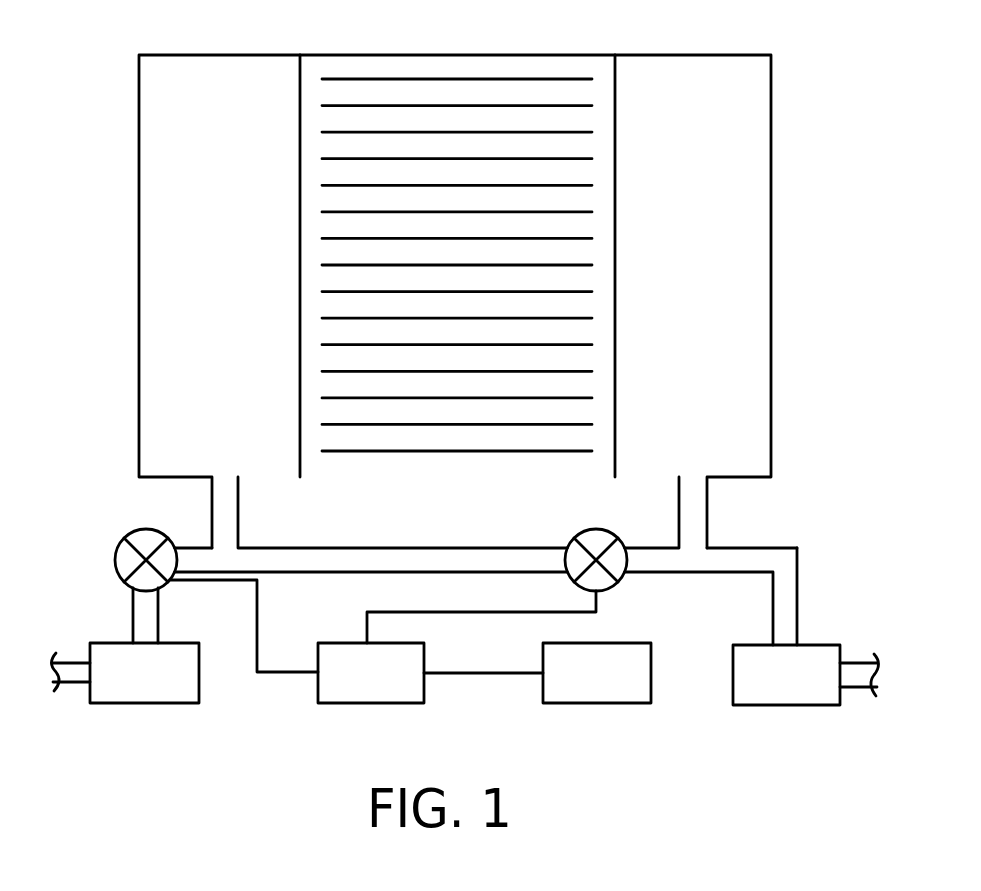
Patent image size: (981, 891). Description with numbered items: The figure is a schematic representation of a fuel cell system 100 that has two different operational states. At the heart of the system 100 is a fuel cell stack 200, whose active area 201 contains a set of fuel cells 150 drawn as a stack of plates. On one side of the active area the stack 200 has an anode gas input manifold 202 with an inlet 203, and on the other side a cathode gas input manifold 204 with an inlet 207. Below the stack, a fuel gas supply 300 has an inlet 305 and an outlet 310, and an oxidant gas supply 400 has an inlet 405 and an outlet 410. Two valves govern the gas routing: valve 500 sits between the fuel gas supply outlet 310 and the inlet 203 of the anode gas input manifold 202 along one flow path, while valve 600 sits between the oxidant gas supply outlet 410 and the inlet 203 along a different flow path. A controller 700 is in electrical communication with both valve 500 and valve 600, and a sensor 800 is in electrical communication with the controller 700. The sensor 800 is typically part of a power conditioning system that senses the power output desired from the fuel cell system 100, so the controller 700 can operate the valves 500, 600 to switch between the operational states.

The system 100 is at (78, 349).
The fuel cells 150 is at (583, 91).
The fuel cell stack 200 is at (852, 293).
The active area 201 is at (377, 120).
The anode gas input manifold 202 is at (177, 235).
The inlet 203 is at (227, 480).
The cathode gas input manifold 204 is at (725, 155).
The inlet 207 is at (690, 482).
The fuel gas supply 300 is at (120, 687).
The inlet 305 is at (90, 670).
The outlet 310 is at (147, 643).
The oxidant gas supply 400 is at (760, 687).
The inlet 405 is at (847, 675).
The outlet 410 is at (788, 645).
The valve 500 is at (115, 565).
The valve 600 is at (607, 588).
The controller 700 is at (345, 687).
The sensor 800 is at (571, 687).